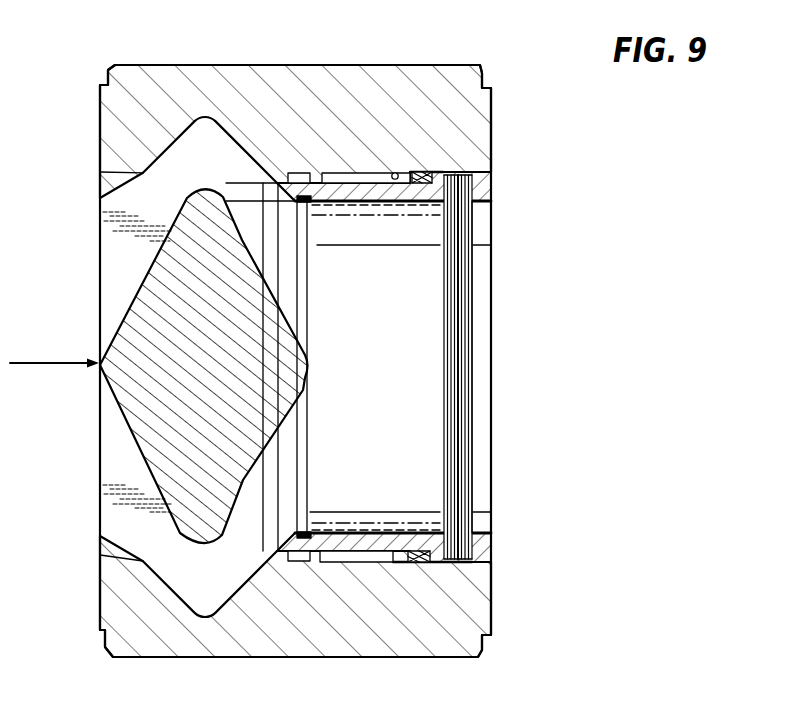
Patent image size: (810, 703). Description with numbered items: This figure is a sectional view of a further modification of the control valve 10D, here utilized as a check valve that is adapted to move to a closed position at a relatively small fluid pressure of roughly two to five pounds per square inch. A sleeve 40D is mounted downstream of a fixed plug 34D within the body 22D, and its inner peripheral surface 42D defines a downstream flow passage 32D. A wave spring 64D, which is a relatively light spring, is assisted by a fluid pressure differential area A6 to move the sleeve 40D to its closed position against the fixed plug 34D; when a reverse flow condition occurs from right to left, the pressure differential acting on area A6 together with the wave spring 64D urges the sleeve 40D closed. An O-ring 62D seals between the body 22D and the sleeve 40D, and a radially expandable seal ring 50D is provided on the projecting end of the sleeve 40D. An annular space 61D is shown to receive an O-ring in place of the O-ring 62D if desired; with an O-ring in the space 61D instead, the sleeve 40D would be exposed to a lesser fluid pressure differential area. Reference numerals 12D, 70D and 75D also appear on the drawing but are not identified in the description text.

The valve 10D is at (328, 53).
The body 22D is at (397, 73).
The lower housing part 12D is at (295, 619).
The inner peripheral surface 42D is at (333, 533).
The bearing ring 70D is at (357, 180).
The O-ring seal 75D is at (392, 176).
The O-ring 62D is at (423, 177).
The wave spring 64D is at (463, 189).
The sleeve 40D is at (393, 533).
The annular space 61D is at (298, 557).
The radially expandable seal ring 50D is at (298, 201).
The downstream flow passage 32D is at (441, 416).
The fixed plug 34D is at (287, 380).
The fluid pressure differential area A6 is at (247, 217).